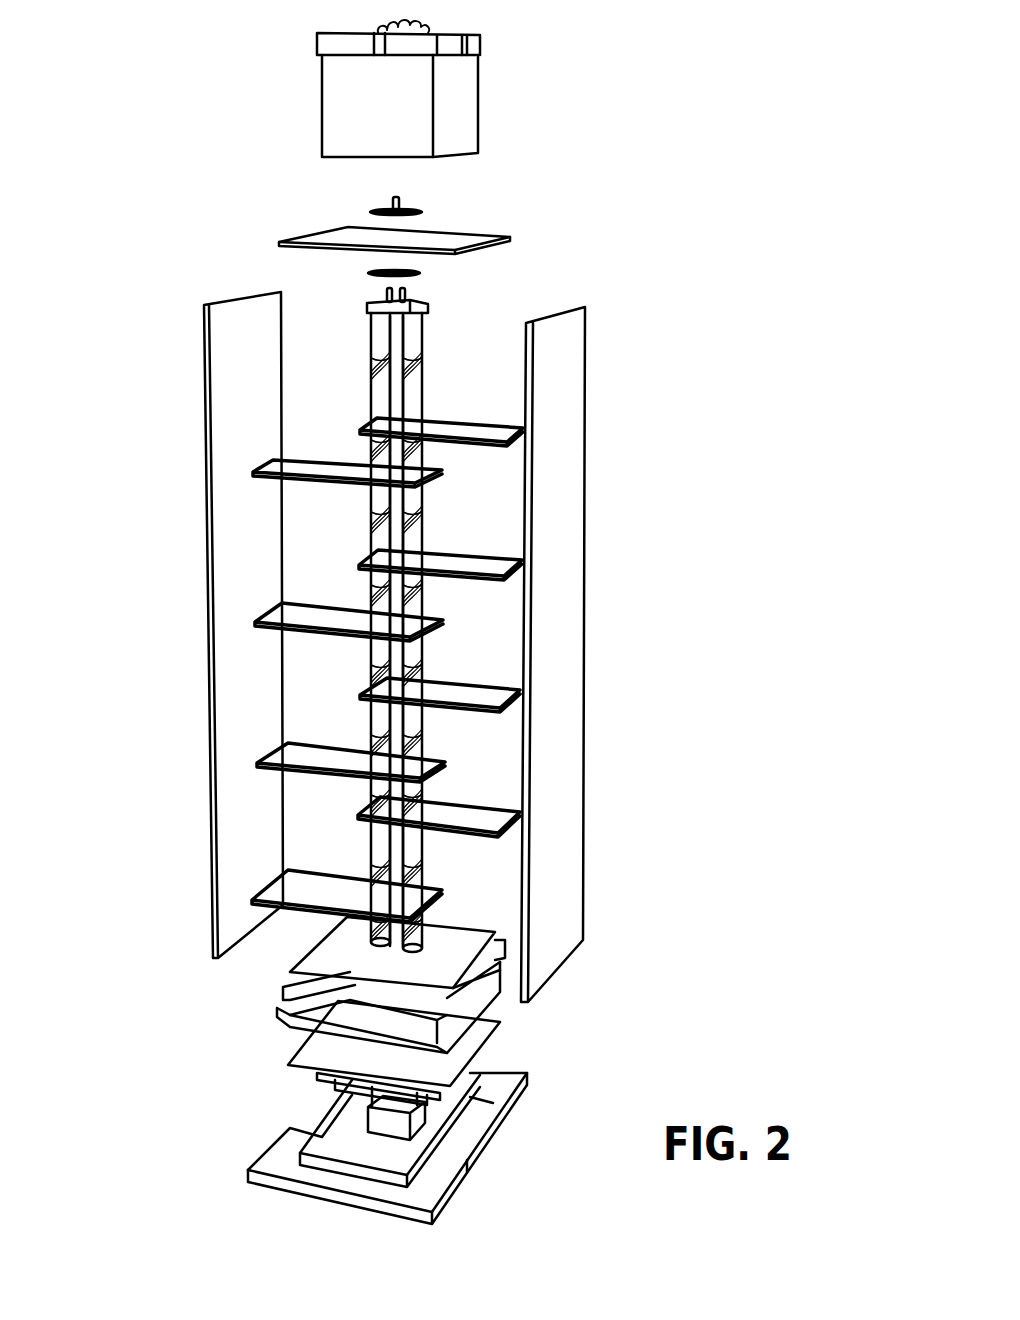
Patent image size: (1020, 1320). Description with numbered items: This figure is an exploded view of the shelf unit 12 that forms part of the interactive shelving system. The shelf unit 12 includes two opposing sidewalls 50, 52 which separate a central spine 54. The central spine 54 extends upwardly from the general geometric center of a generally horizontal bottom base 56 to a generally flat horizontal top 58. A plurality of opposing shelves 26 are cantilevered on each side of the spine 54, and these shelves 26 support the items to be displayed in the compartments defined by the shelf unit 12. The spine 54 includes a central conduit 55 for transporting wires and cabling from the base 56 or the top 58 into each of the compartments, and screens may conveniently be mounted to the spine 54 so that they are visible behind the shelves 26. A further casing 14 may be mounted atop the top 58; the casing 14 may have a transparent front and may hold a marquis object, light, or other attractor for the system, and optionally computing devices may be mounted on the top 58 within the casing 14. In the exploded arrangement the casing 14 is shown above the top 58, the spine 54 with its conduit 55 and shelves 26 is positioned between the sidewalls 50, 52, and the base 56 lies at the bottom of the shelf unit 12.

The shelf unit 12 is at (132, 238).
The casing 14 is at (455, 103).
The shelves 26 is at (330, 468).
The sidewall 50 is at (207, 423).
The sidewall 52 is at (565, 357).
The central spine 54 is at (414, 331).
The central conduit 55 is at (397, 380).
The bottom base 56 is at (277, 1010).
The top 58 is at (540, 240).